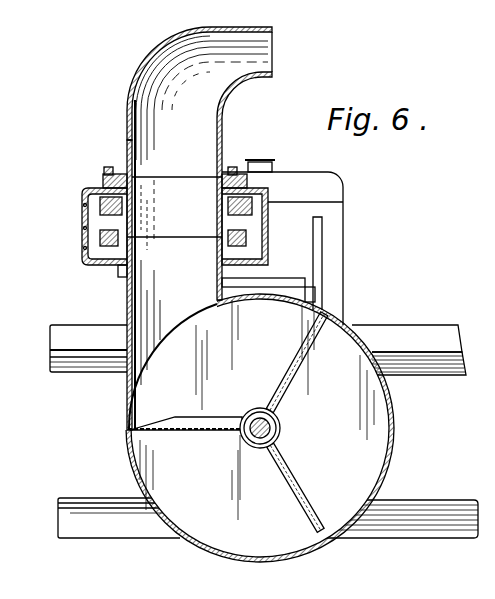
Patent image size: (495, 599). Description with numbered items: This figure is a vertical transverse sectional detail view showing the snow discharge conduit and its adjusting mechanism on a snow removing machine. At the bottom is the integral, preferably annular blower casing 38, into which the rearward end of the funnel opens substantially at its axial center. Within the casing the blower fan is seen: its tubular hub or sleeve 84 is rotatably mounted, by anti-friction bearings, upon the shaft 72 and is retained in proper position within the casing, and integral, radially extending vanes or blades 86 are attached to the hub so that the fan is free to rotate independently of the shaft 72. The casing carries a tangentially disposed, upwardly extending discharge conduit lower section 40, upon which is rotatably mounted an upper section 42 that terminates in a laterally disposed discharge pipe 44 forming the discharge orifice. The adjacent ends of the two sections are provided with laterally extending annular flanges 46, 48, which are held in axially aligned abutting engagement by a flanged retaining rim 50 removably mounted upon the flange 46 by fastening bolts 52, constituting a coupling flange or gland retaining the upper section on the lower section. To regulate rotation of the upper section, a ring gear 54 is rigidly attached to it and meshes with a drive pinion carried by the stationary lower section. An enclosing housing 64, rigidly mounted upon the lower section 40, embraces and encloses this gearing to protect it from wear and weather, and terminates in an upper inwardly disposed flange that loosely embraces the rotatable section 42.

The blower casing 38 is at (396, 440).
The discharge conduit lower section 40 is at (126, 298).
The upper section 42 is at (126, 132).
The discharge pipe 44 is at (257, 78).
The annular flange 46 is at (174, 254).
The annular flange 48 is at (177, 202).
The flanged retaining rim 50 is at (90, 226).
The fastening bolts 52 is at (262, 226).
The ring gear 54 is at (247, 208).
The enclosing housing 64 is at (96, 237).
The shaft 72 is at (254, 441).
The hub 84 is at (279, 428).
The blades 86 is at (309, 345).